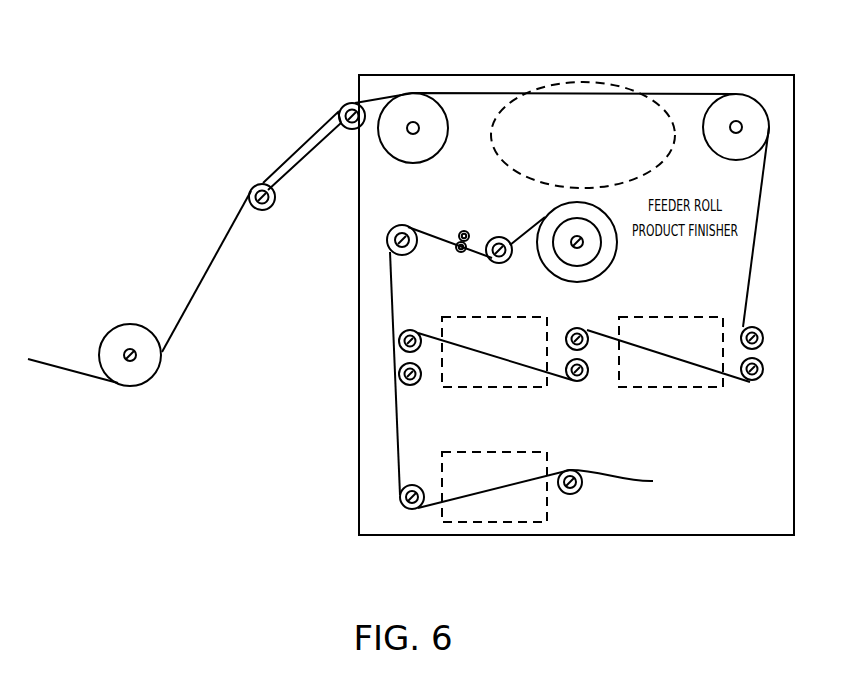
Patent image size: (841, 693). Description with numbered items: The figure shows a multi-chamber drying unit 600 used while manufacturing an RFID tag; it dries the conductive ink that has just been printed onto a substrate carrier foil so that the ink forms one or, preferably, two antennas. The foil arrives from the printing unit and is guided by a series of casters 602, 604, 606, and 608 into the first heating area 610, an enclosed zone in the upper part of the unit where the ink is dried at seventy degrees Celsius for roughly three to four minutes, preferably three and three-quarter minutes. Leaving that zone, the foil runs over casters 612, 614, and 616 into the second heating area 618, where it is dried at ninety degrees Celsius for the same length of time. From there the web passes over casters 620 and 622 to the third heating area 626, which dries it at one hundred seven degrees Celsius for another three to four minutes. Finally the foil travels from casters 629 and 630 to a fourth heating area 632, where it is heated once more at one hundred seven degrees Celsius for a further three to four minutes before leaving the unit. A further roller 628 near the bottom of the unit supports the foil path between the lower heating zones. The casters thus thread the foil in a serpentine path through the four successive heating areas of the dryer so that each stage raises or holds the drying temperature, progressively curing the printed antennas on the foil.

The multi-chamber drying unit 600 is at (488, 74).
The caster 602 is at (130, 386).
The caster 604 is at (265, 211).
The caster 606 is at (347, 105).
The caster 608 is at (405, 108).
The heating area 610 is at (582, 82).
The caster 612 is at (735, 98).
The caster 614 is at (756, 328).
The caster 616 is at (752, 383).
The heating area 618 is at (643, 390).
The caster 620 is at (588, 329).
The caster 622 is at (573, 382).
The heating area 626 is at (487, 389).
The roller 628 is at (413, 511).
The caster 629 is at (407, 330).
The caster 630 is at (402, 382).
The fourth heating area 632 is at (487, 522).